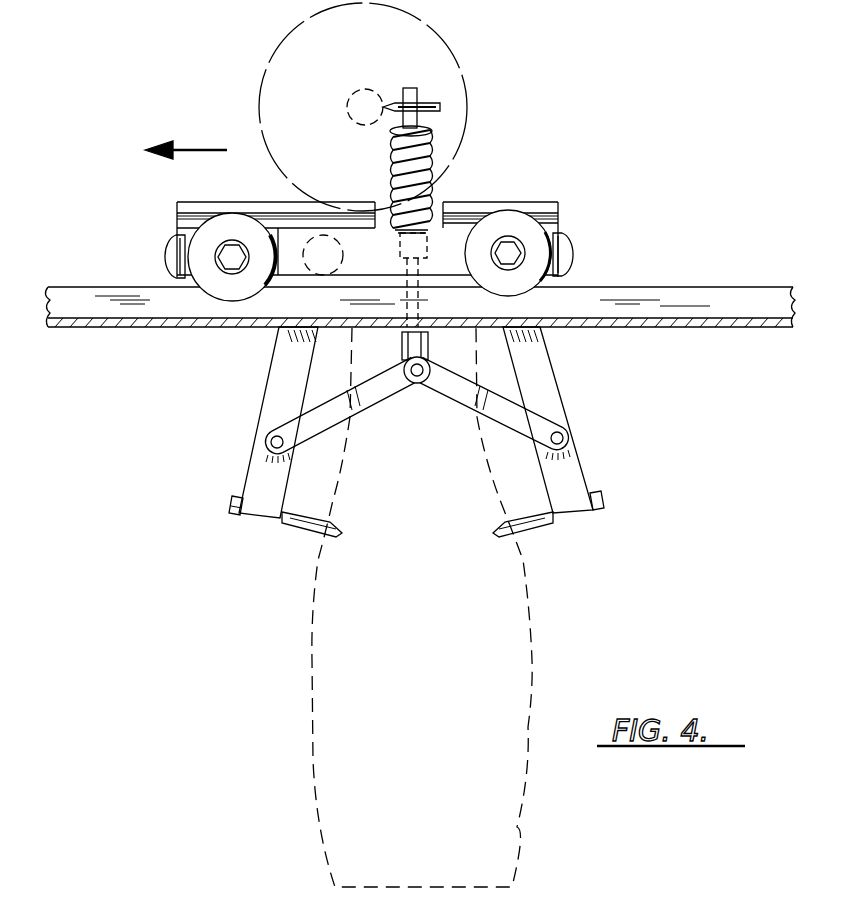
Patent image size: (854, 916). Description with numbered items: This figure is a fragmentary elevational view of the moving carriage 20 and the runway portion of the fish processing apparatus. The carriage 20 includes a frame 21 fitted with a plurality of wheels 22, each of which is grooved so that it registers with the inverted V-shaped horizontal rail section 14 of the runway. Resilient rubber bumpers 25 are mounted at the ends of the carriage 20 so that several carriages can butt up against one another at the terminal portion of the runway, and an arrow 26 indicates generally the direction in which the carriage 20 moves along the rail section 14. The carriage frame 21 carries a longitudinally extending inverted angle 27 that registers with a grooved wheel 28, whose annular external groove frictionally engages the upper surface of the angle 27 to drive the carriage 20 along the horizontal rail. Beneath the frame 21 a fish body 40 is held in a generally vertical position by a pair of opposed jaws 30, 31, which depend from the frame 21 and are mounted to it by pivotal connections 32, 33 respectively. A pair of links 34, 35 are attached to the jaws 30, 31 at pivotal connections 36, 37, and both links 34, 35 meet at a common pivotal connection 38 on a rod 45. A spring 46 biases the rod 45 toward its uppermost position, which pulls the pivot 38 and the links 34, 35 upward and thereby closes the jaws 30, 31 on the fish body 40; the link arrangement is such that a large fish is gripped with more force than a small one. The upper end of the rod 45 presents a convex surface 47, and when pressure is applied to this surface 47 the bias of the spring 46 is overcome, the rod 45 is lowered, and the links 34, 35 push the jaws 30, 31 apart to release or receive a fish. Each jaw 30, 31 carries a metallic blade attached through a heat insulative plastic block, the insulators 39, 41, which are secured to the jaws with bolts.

The horizontal rail section 14 is at (740, 287).
The carriage 20 is at (675, 212).
The frame 21 is at (177, 222).
The wheels 22 is at (220, 287).
The bumpers 25 is at (163, 256).
The arrow 26 is at (210, 150).
The inverted angle 27 is at (257, 202).
The grooved wheel 28 is at (453, 58).
The jaw 30 is at (278, 400).
The jaw 31 is at (540, 390).
The pivotal connection 32 is at (352, 263).
The pivotal connection 33 is at (508, 253).
The link 34 is at (367, 393).
The link 35 is at (470, 388).
The pivotal connection 36 is at (270, 446).
The pivotal connection 37 is at (564, 440).
The pivotal connection 38 is at (417, 383).
The insulator 39 is at (303, 535).
The fish body 40 is at (446, 631).
The insulator 41 is at (540, 533).
The rod 45 is at (458, 202).
The spring 46 is at (427, 160).
The surface 47 is at (427, 123).